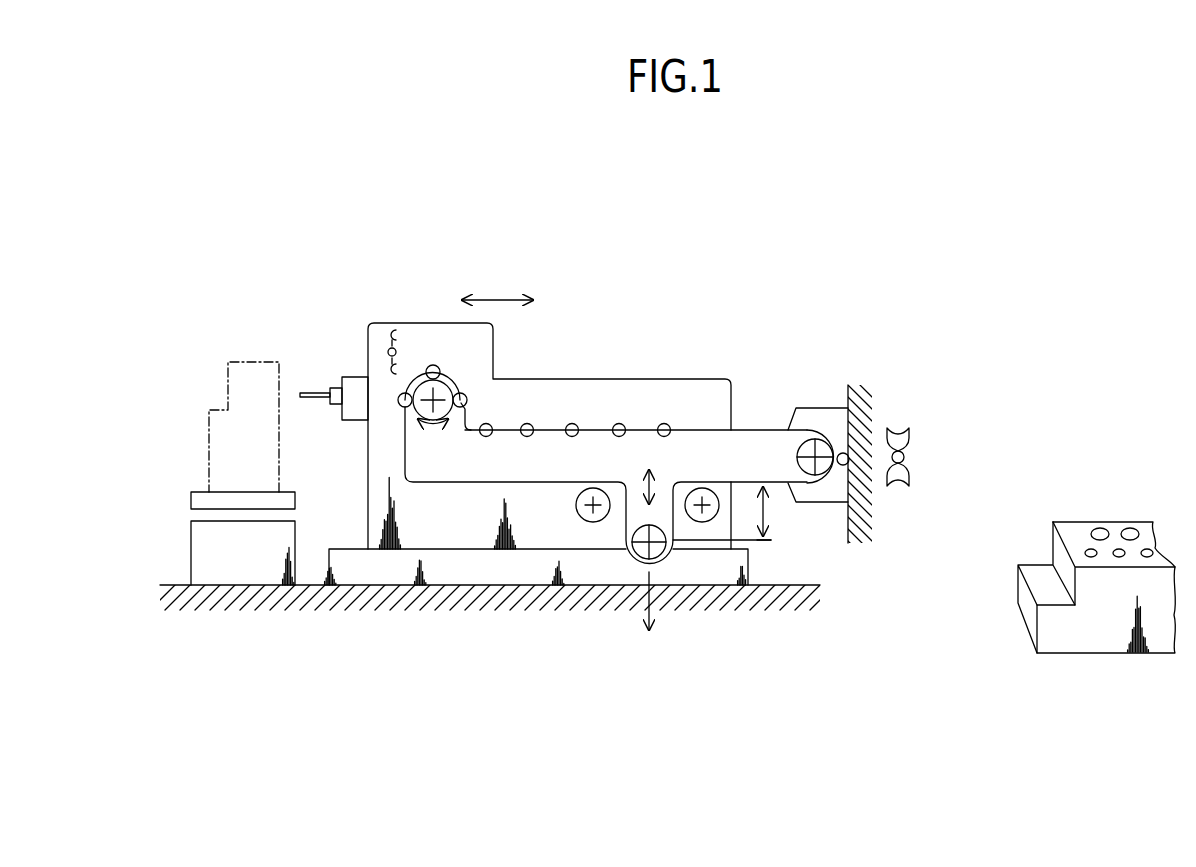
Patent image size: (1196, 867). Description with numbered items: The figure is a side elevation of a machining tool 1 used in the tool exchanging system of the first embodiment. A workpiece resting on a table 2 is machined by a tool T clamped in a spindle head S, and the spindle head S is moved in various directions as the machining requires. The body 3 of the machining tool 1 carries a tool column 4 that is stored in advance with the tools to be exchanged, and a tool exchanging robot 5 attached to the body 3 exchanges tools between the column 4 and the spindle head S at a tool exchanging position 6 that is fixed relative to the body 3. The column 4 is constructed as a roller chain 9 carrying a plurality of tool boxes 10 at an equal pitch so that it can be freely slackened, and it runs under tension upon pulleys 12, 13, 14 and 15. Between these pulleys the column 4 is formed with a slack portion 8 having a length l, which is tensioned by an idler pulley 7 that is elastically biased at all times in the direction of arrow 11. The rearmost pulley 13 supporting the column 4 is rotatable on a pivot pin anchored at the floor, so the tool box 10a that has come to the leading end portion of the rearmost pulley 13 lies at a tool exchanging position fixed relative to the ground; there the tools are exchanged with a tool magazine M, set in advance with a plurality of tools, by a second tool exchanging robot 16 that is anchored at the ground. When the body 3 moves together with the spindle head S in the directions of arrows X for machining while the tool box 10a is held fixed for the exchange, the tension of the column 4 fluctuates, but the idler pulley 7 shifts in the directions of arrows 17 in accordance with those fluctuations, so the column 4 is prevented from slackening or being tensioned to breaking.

The machining tool 1 is at (550, 310).
The table 2 is at (191, 500).
The body 3 is at (657, 398).
The tool column 4 is at (698, 420).
The tool exchanging robot 5 is at (390, 328).
The tool exchanging position 6 is at (433, 365).
The idler pulley 7 is at (645, 550).
The slack portion 8 is at (627, 522).
The roller chain 9 is at (772, 430).
The tool boxes 10 is at (487, 424).
The tool box 10a is at (853, 453).
The arrow 11 is at (652, 632).
The pulley 12 is at (417, 406).
The rearmost pulley 13 is at (808, 447).
The pulley 14 is at (707, 516).
The pulley 15 is at (582, 516).
The tool exchanging robot 16 is at (920, 456).
The arrows 17 is at (657, 485).
The tool T is at (312, 393).
The spindle head S is at (344, 378).
The arrows X is at (497, 297).
The tool magazine M is at (1118, 617).
The length l is at (763, 513).